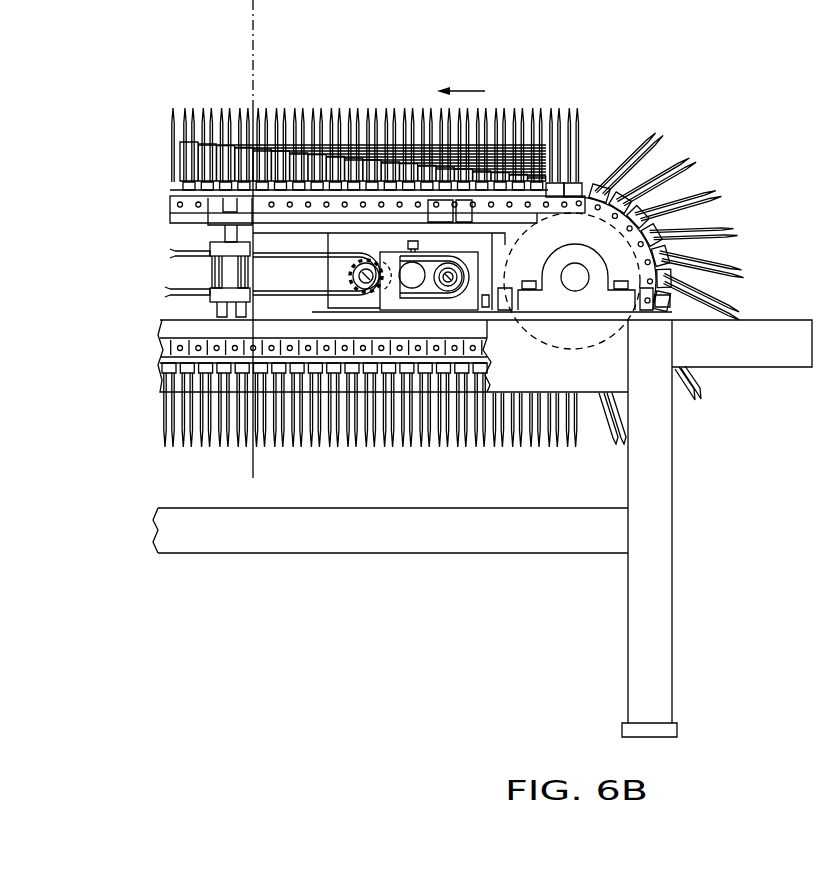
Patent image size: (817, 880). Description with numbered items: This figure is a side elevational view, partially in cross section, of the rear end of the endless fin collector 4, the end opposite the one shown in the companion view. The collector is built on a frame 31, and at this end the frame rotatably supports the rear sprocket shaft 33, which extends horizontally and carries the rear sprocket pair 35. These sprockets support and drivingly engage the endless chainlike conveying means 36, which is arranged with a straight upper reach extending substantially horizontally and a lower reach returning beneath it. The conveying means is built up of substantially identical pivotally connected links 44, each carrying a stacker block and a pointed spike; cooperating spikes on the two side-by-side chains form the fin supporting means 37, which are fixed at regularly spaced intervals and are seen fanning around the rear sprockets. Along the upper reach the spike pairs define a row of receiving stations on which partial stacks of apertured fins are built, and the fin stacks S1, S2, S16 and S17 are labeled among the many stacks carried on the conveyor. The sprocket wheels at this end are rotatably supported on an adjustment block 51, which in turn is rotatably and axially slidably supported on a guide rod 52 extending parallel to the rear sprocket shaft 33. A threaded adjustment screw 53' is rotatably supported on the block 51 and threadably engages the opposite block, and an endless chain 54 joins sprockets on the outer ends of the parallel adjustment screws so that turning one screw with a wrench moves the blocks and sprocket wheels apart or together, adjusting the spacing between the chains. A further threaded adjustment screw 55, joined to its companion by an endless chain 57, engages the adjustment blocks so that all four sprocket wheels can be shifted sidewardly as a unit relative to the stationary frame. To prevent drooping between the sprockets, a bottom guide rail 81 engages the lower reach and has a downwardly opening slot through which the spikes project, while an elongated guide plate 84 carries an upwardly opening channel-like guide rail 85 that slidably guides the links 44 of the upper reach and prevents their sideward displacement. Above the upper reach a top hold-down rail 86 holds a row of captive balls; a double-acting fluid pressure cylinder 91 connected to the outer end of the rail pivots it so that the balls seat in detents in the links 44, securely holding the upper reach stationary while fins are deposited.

The endless fin collector 4 is at (95, 425).
The frame 31 is at (327, 540).
The rear sprocket shaft 33 is at (578, 285).
The rear sprocket pair 35 is at (513, 277).
The endless chainlike conveying means 36 is at (180, 336).
The fin supporting means 37 is at (713, 182).
The link 44 is at (185, 347).
The adjustment block 51 is at (334, 283).
The guide rod 52 is at (413, 272).
The threaded adjustment screw 53' is at (370, 261).
The endless chain 54 is at (282, 241).
The threaded adjustment screw 55 is at (452, 287).
The endless chain 57 is at (424, 297).
The bottom guide rail 81 is at (318, 358).
The guide plate 84 is at (183, 227).
The guide rail 85 is at (178, 215).
The top hold-down rail 86 is at (185, 192).
The double-acting fluid pressure cylinder 91 is at (227, 277).
The fin stack S1 is at (527, 184).
The fin stack S2 is at (563, 199).
The fin stack S16 is at (268, 137).
The fin stack S17 is at (238, 150).